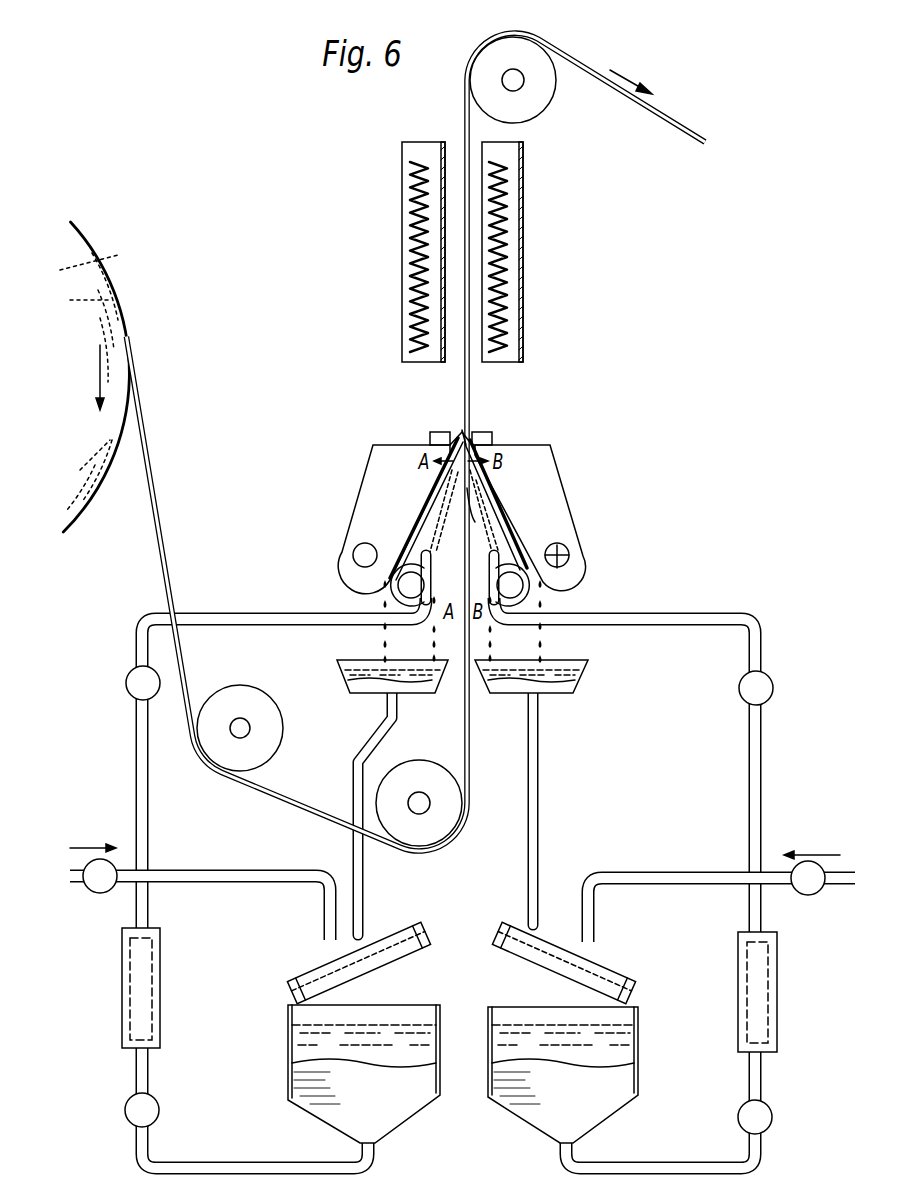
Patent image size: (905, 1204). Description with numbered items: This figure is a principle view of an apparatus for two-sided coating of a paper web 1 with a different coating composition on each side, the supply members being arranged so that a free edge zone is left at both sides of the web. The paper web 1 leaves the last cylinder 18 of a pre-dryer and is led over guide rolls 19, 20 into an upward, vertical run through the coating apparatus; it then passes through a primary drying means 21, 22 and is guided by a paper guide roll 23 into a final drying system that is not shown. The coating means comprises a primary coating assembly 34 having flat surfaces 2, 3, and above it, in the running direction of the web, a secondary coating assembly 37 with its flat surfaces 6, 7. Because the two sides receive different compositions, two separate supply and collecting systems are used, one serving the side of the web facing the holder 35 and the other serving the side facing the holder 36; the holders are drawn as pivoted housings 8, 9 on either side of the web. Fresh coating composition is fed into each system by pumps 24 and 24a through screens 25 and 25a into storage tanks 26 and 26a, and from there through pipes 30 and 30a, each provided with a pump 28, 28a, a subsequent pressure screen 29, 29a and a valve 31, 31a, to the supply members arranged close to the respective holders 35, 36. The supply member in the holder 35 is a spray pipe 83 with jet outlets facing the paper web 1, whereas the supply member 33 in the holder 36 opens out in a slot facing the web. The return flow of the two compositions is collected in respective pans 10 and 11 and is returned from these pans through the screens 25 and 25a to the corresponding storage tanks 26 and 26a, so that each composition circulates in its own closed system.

The paper web 1 is at (471, 393).
The flat surface 2 is at (480, 497).
The flat surface 3 is at (437, 493).
The flat surface 6 is at (472, 434).
The flat surface 7 is at (458, 422).
The right housing 8 is at (563, 498).
The left housing 9 is at (366, 500).
The pan 10 is at (520, 690).
The pan 11 is at (410, 690).
The cylinder 18 is at (100, 292).
The guide roll 19 is at (258, 712).
The guide roll 20 is at (445, 820).
The primary drying means 21 is at (402, 215).
The primary drying means 22 is at (514, 206).
The paper guide roll 23 is at (540, 100).
The pump 24 is at (104, 882).
The pump 24a is at (808, 890).
The screen 25 is at (430, 935).
The screen 25a is at (520, 940).
The storage tank 26 is at (412, 1114).
The storage tank 26a is at (516, 1106).
The pump 28 is at (148, 1105).
The pump 28a is at (762, 1112).
The pressure screen 29 is at (160, 990).
The pressure screen 29a is at (738, 979).
The pipe 30 is at (149, 772).
The pipe 30a is at (749, 768).
The valve 31 is at (130, 683).
The valve 31a is at (743, 689).
The supply member 33 is at (440, 512).
The primary coating assembly 34 is at (494, 506).
The holder 35 is at (520, 568).
The holder 36 is at (424, 548).
The secondary coating assembly 37 is at (502, 431).
The spray pipe 83 is at (500, 545).